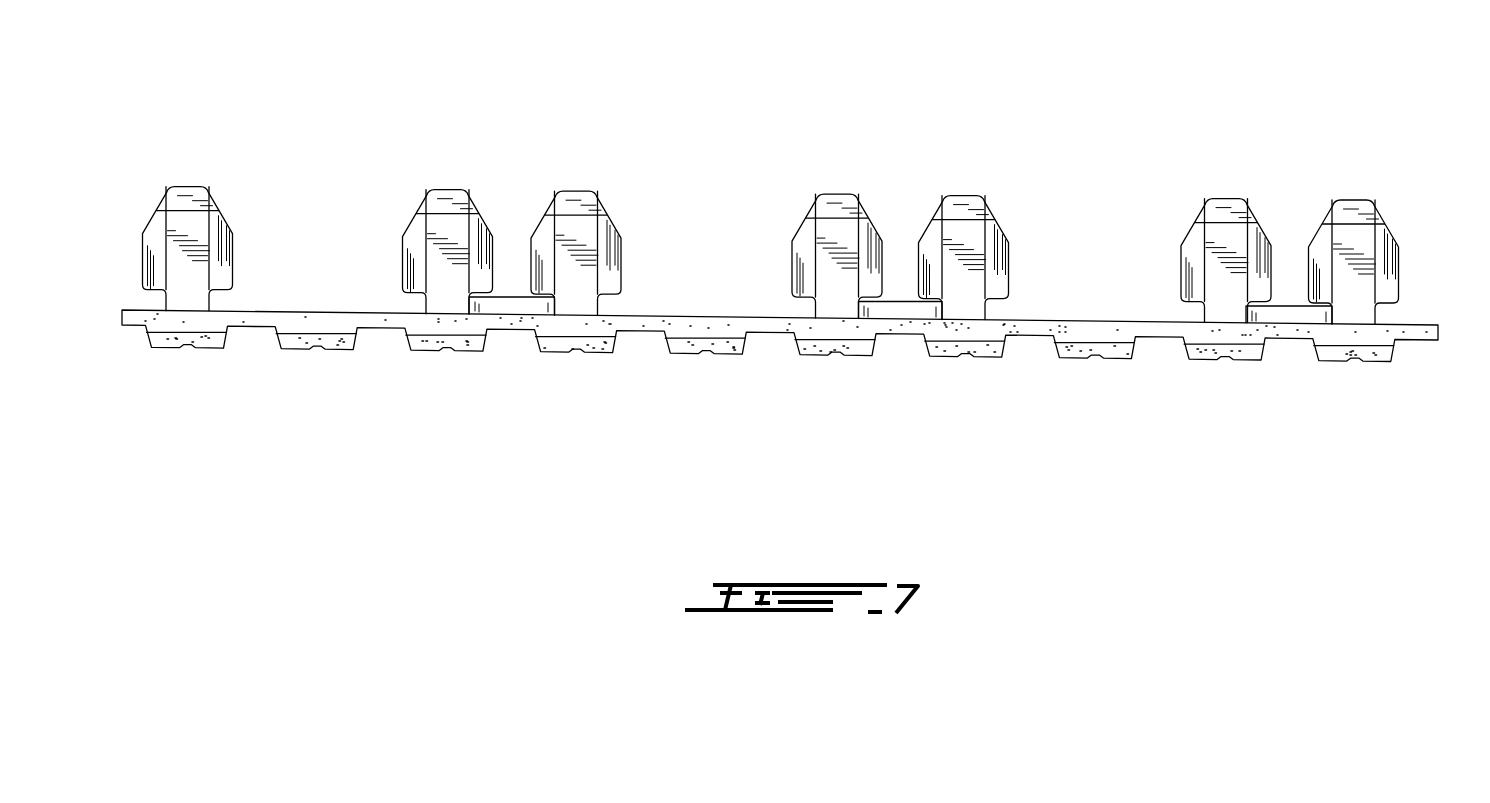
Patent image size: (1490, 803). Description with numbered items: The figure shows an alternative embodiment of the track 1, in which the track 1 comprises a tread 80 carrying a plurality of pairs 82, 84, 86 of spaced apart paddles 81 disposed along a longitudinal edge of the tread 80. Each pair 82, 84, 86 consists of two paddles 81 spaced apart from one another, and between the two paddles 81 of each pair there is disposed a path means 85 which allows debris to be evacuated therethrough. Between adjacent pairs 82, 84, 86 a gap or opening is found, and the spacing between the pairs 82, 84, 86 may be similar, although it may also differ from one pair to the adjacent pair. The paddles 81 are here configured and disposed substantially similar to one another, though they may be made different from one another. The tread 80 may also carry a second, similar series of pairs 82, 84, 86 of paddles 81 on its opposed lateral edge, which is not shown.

The track 1 is at (1338, 110).
The tread 80 is at (1413, 340).
The paddle 81 is at (808, 238).
The pair of spaced apart paddles 82 is at (448, 187).
The pair of spaced apart paddles 84 is at (967, 192).
The path means 85 is at (512, 306).
The pair of spaced apart paddles 86 is at (1355, 197).